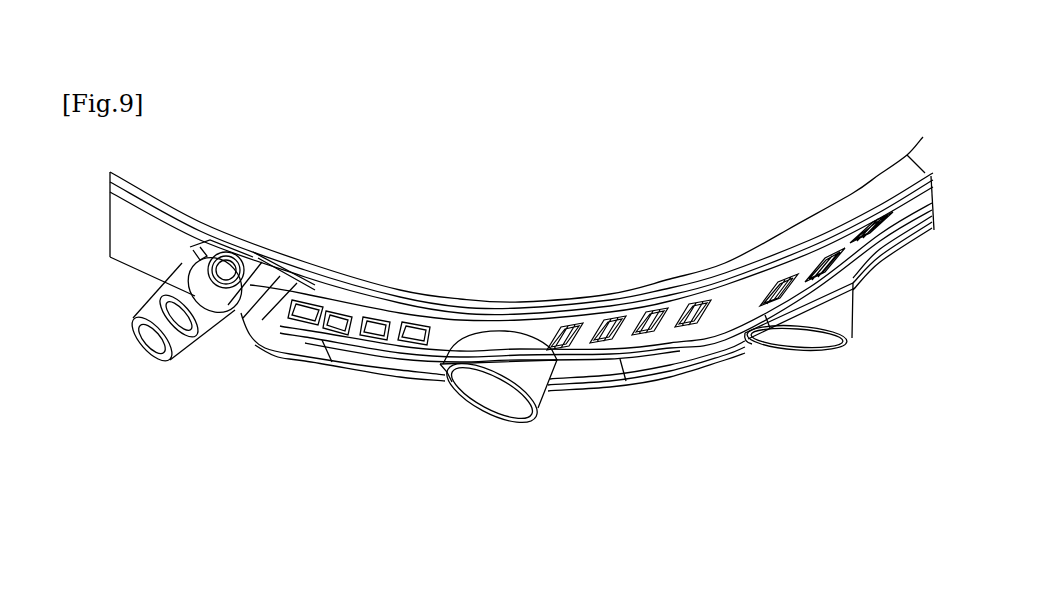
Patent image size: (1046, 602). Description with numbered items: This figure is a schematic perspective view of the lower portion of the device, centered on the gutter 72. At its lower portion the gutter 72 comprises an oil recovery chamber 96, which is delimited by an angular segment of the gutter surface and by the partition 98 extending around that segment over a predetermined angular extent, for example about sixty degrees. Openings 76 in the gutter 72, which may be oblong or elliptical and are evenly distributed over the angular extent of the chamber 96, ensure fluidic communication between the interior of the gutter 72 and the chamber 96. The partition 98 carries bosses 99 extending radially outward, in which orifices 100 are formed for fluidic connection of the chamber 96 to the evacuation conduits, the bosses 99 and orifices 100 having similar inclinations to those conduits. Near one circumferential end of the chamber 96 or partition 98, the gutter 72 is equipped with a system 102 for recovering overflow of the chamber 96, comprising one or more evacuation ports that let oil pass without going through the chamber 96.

The gutter 72 is at (240, 182).
The openings 76 is at (427, 338).
The oil recovery chamber 96 is at (414, 372).
The partition 98 is at (378, 405).
The bosses 99 is at (537, 392).
The orifices 100 is at (507, 402).
The system for recovering the overflow 102 is at (198, 363).